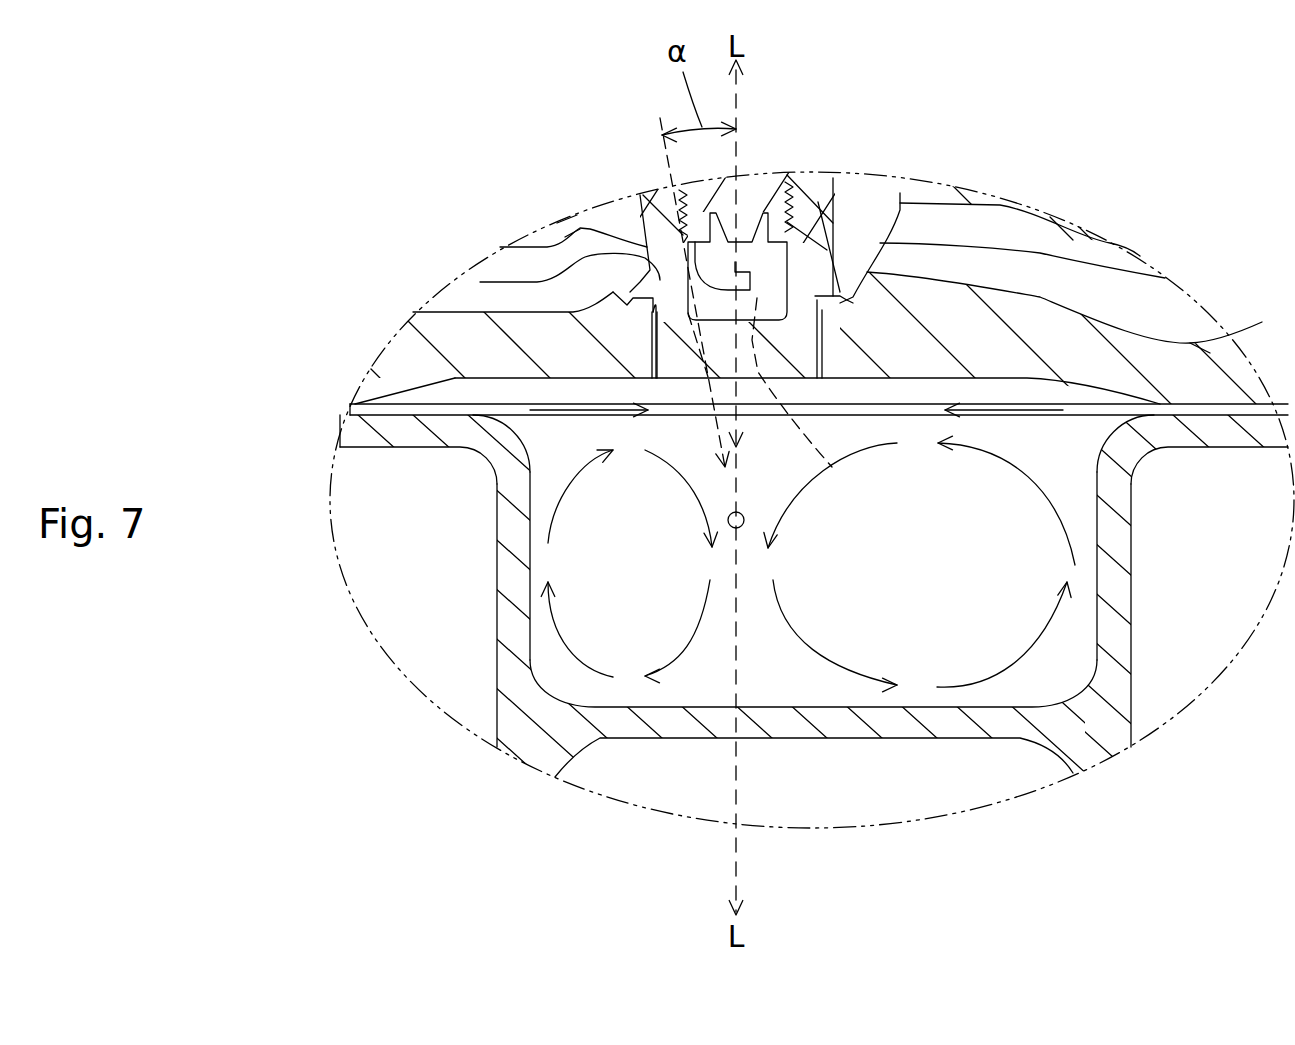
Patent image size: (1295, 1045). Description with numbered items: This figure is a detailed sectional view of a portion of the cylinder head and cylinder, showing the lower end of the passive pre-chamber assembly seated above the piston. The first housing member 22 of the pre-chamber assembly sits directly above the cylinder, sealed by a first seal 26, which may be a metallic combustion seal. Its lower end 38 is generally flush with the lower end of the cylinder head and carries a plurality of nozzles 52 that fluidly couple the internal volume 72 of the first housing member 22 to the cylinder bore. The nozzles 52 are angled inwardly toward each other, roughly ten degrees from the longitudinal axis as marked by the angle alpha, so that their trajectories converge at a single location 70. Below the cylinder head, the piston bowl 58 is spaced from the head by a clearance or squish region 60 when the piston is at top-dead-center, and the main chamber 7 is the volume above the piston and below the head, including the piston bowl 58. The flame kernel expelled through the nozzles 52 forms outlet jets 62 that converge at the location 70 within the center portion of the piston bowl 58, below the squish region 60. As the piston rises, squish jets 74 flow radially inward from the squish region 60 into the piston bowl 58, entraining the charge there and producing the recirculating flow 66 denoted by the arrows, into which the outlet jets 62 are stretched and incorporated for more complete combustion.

The main chamber 7 is at (1070, 436).
The first housing member 22 is at (660, 248).
The first seal 26 is at (887, 390).
The lower end of first housing member 38 is at (893, 388).
The nozzles 52 is at (632, 367).
The piston bowl 58 is at (712, 683).
The squish region 60 is at (388, 416).
The outlet jets 62 is at (652, 162).
The recirculating flow 66 is at (565, 622).
The location 70 is at (745, 518).
The internal volume 72 is at (765, 258).
The squish jet 74 is at (560, 418).